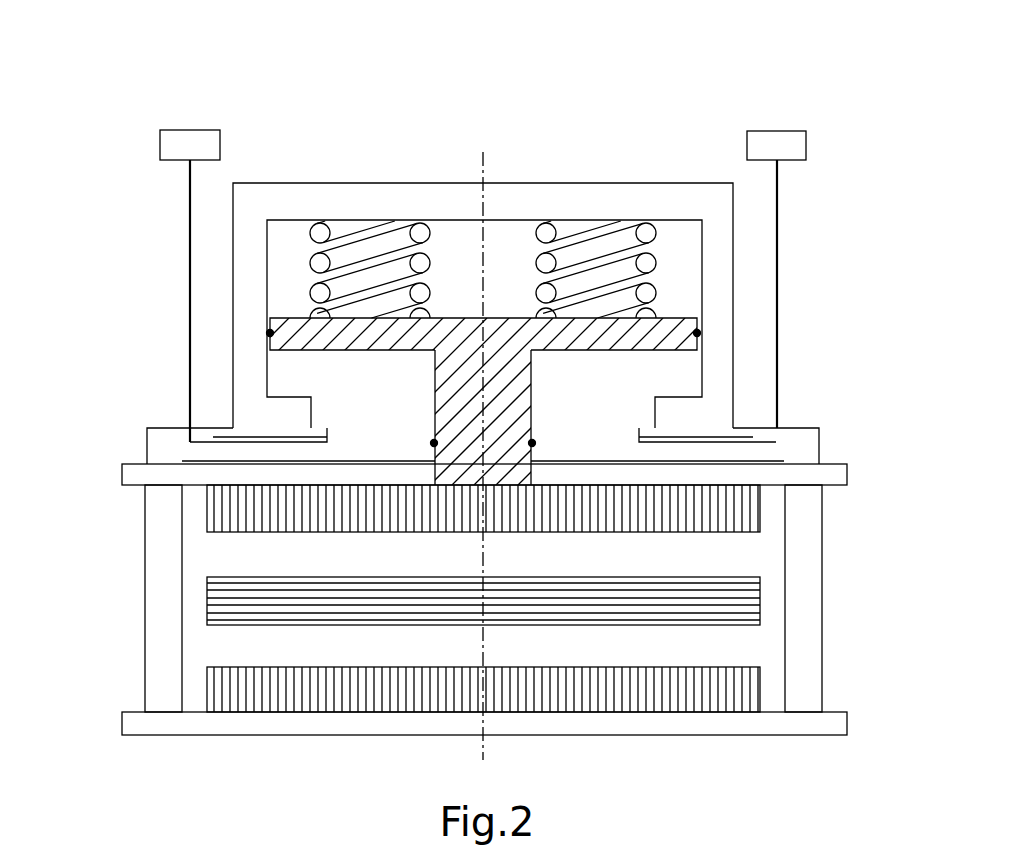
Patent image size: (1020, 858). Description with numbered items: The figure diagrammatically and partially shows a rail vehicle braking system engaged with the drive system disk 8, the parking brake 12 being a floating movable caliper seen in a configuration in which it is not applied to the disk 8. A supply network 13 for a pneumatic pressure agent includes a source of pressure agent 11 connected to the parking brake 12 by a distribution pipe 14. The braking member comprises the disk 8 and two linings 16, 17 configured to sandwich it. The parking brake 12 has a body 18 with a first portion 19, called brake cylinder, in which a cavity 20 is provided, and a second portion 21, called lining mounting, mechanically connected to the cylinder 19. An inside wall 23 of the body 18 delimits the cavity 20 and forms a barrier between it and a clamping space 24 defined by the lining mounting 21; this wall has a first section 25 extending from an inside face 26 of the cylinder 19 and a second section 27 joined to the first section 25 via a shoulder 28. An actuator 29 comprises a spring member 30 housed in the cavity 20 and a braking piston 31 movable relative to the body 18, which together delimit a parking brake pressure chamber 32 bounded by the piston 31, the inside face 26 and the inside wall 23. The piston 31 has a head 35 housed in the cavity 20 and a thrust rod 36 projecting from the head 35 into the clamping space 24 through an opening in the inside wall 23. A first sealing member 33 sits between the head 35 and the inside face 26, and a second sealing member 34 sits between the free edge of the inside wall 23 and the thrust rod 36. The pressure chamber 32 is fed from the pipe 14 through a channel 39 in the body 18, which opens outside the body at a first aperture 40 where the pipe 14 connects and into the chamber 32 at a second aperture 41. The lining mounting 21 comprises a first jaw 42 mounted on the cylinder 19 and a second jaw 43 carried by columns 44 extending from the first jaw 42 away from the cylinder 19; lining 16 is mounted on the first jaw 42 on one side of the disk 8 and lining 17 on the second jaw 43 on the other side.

The drive system disk 8 is at (248, 590).
The source of pressure agent 11 is at (205, 142).
The parking brake 12 is at (855, 405).
The supply network 13 is at (109, 167).
The distribution pipe 14 is at (190, 253).
The brake lining 16 is at (350, 520).
The brake lining 17 is at (330, 680).
The body 18 is at (268, 183).
The first portion (brake cylinder) 19 is at (350, 196).
The cavity 20 is at (483, 216).
The second portion (lining mounting) 21 is at (147, 545).
The inside wall 23 is at (708, 377).
The clamping space 24 is at (757, 557).
The first section 25 is at (270, 418).
The inside face 26 is at (267, 370).
The second section 27 is at (370, 420).
The shoulder 28 is at (315, 402).
The actuator 29 is at (497, 300).
The spring member 30 is at (385, 240).
The braking piston 31 is at (270, 320).
The parking brake pressure chamber 32 is at (618, 393).
The first sealing member 33 is at (270, 333).
The second sealing member 34 is at (533, 443).
The head 35 is at (450, 332).
The thrust rod 36 is at (445, 395).
The channel 39 is at (212, 440).
The first aperture 40 is at (188, 427).
The second aperture 41 is at (332, 425).
The first jaw 42 is at (838, 470).
The second jaw 43 is at (838, 722).
The columns 44 is at (160, 607).